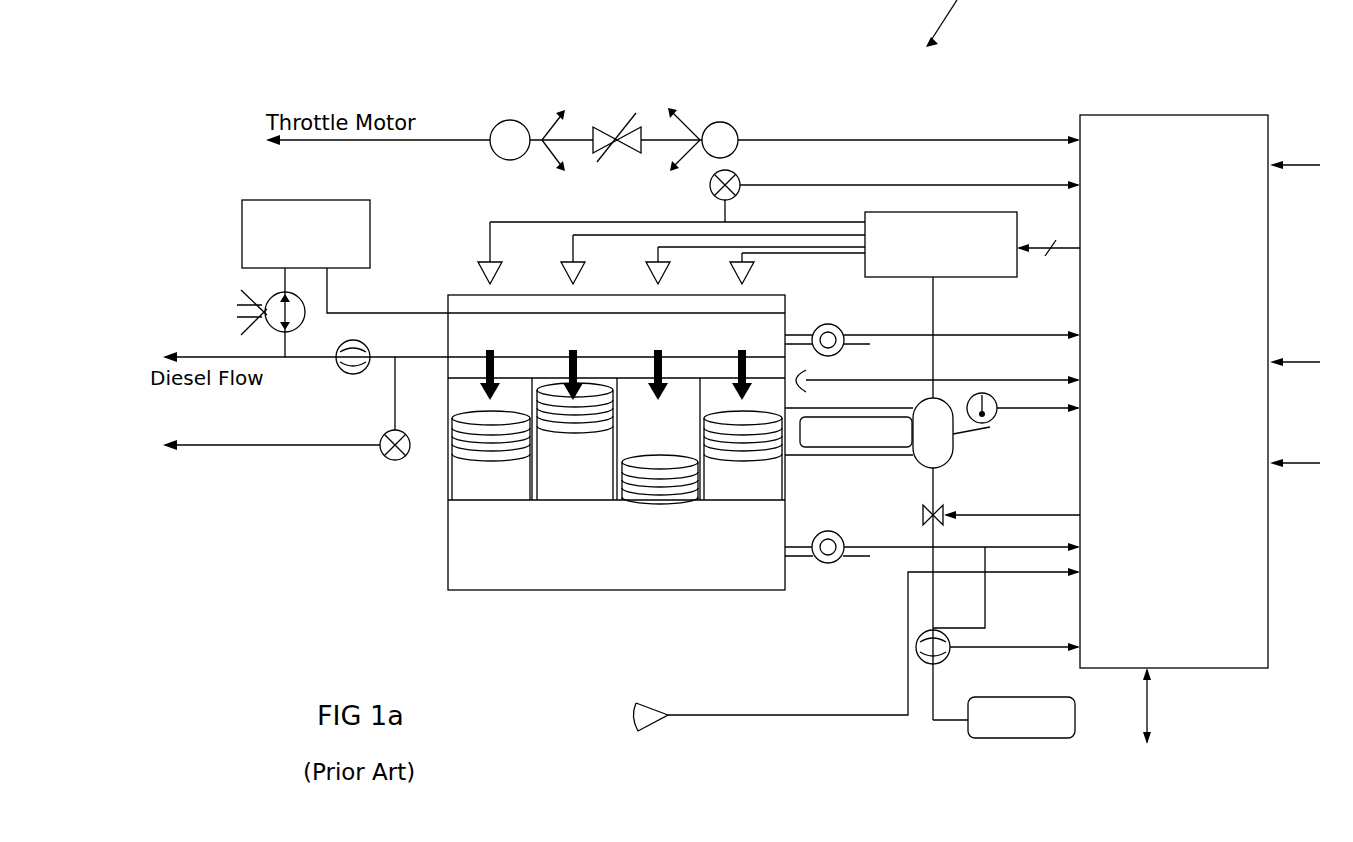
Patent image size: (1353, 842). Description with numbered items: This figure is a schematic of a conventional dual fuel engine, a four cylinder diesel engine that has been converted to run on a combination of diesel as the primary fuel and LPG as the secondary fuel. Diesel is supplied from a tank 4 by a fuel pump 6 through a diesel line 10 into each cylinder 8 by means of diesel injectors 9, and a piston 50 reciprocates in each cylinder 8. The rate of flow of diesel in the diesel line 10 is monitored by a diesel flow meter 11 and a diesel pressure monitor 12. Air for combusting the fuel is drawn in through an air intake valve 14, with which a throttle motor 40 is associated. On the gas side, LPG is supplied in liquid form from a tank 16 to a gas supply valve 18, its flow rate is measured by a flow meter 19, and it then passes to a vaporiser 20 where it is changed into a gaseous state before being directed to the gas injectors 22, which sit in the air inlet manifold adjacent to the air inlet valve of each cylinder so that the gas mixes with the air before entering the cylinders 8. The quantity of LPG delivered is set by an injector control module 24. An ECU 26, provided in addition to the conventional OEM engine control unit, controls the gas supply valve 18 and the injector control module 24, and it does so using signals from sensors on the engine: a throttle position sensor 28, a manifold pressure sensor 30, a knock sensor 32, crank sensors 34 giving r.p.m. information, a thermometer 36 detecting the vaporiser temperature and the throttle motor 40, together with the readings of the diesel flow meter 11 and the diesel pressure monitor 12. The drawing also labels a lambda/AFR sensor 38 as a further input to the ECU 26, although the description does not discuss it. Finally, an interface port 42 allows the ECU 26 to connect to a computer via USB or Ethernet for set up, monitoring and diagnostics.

The diesel tank 4 is at (368, 226).
The fuel pump 6 is at (222, 292).
The cylinder 8 is at (582, 464).
The diesel injector 9 is at (486, 376).
The diesel line 10 is at (397, 312).
The diesel flow meter 11 is at (336, 366).
The diesel pressure monitor 12 is at (383, 458).
The air intake valve 14 is at (677, 97).
The LPG tank 16 is at (1005, 740).
The gas supply valve 18 is at (946, 503).
The flow meter 19 is at (945, 631).
The vaporiser 20 is at (955, 450).
The gas injectors 22 is at (995, 278).
The injector control module 24 is at (1113, 245).
The ECU 26 is at (1190, 108).
The throttle position sensor 28 is at (740, 123).
The manifold pressure sensor 30 is at (745, 190).
The knock sensor 32 is at (808, 386).
The crank sensor 34 is at (843, 352).
The thermometer 36 is at (1000, 420).
The lambda / AFR sensor 38 is at (835, 664).
The throttle motor 40 is at (538, 118).
The interface port 42 is at (1150, 705).
The piston 50 is at (452, 450).